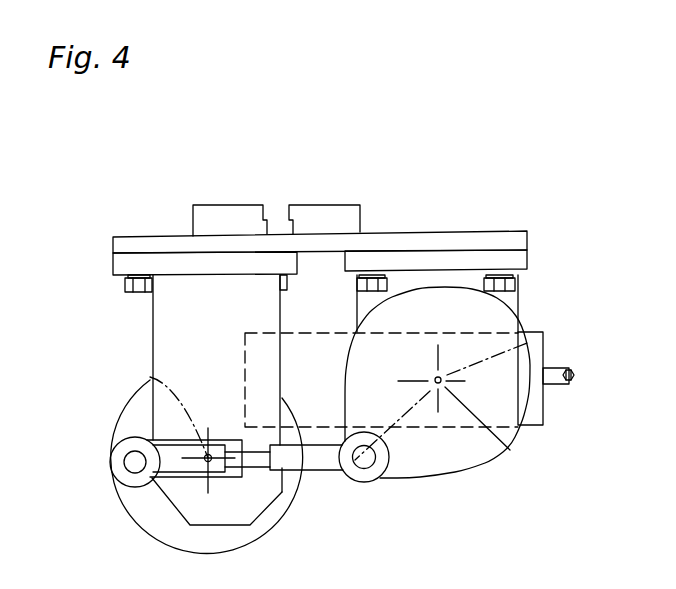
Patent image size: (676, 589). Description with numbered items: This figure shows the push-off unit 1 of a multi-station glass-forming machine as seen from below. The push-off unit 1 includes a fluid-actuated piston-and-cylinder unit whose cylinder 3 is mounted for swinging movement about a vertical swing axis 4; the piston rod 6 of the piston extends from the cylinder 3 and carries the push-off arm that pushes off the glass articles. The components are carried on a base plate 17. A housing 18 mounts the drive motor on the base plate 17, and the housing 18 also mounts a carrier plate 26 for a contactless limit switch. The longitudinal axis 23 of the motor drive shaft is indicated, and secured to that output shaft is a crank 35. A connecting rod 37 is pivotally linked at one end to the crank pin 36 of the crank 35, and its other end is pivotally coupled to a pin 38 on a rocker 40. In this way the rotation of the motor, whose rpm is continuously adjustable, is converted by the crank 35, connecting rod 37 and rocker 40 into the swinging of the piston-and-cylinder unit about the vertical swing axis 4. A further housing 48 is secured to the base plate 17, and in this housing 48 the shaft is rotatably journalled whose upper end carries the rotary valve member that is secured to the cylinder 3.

The push-off unit 1 is at (533, 166).
The cylinder 3 is at (543, 425).
The vertical swing axis 4 is at (545, 343).
The piston rod 6 is at (572, 385).
The base plate 17 is at (528, 238).
The housing 18 is at (150, 310).
The longitudinal axis of the motor drive shaft 23 is at (150, 377).
The carrier plate 26 is at (257, 542).
The crank 35 is at (237, 478).
The crank pin 36 is at (123, 447).
The connecting rod 37 is at (110, 470).
The pin 38 is at (380, 481).
The rocker 40 is at (483, 473).
The housing 48 is at (528, 258).